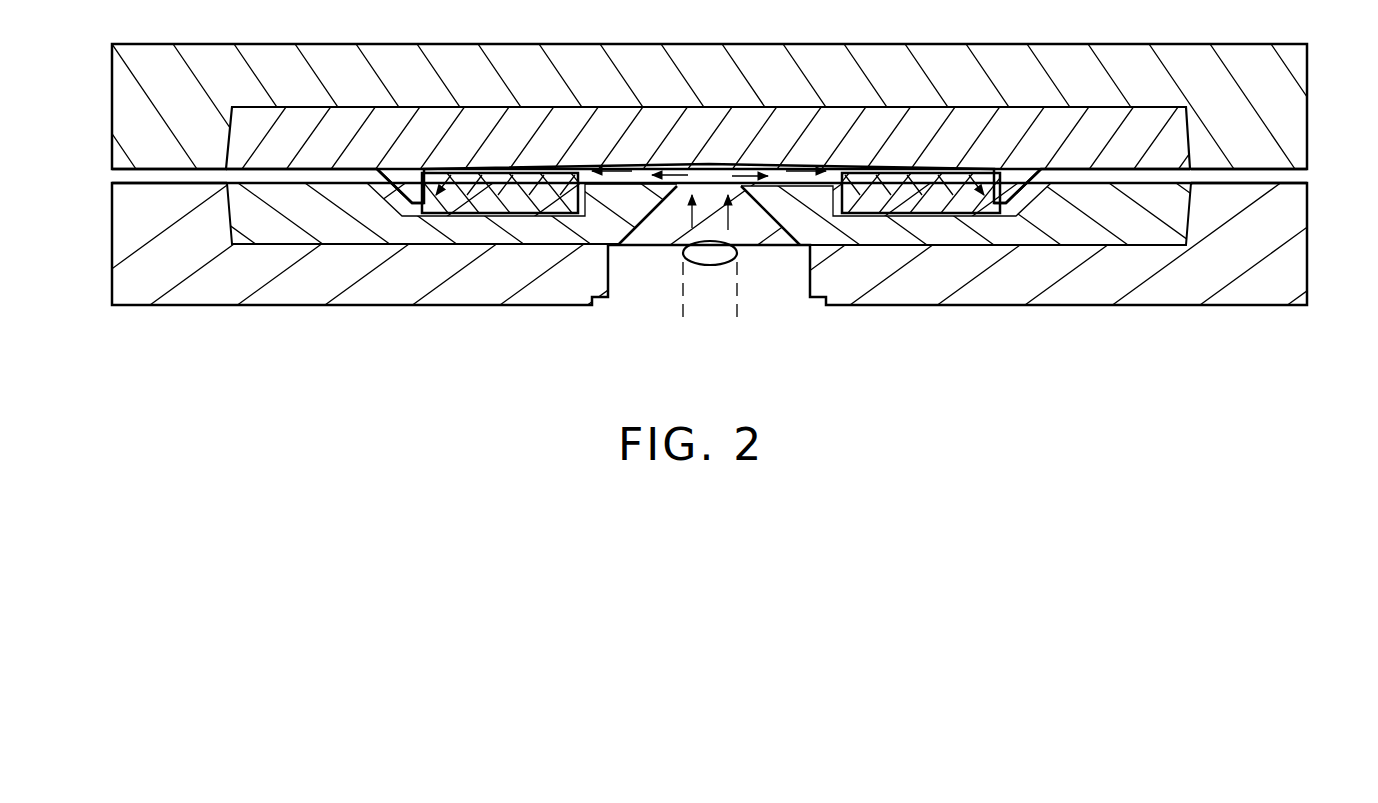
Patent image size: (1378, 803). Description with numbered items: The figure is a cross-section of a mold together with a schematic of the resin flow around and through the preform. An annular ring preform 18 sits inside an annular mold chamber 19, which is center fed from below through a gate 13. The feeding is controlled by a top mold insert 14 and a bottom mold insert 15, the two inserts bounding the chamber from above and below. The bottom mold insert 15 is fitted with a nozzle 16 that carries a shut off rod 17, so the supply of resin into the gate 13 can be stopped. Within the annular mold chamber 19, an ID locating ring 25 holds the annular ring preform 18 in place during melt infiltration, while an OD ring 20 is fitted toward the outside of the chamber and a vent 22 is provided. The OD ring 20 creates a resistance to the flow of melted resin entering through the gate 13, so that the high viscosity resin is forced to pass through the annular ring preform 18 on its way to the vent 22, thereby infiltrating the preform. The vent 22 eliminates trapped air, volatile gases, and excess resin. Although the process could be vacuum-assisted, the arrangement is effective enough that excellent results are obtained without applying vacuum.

The gate 13 is at (642, 175).
The top mold insert 14 is at (568, 118).
The bottom mold insert 15 is at (275, 228).
The nozzle 16 is at (658, 237).
The shut off rod 17 is at (708, 302).
The annular ring preform 18 is at (448, 217).
The annular mold chamber 19 is at (465, 226).
The OD ring 20 is at (404, 213).
The vent 22 is at (108, 176).
The ID locating ring 25 is at (562, 215).